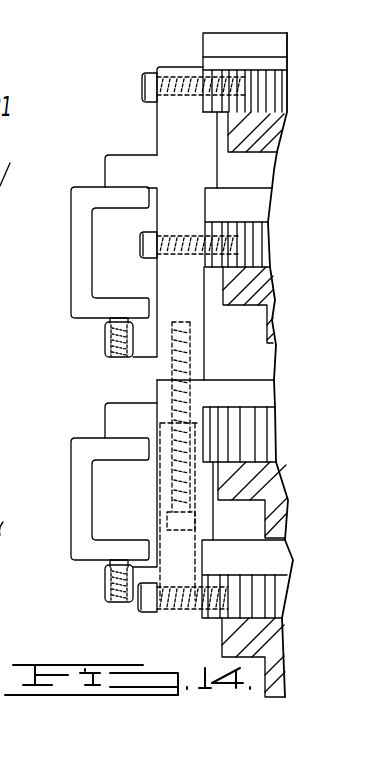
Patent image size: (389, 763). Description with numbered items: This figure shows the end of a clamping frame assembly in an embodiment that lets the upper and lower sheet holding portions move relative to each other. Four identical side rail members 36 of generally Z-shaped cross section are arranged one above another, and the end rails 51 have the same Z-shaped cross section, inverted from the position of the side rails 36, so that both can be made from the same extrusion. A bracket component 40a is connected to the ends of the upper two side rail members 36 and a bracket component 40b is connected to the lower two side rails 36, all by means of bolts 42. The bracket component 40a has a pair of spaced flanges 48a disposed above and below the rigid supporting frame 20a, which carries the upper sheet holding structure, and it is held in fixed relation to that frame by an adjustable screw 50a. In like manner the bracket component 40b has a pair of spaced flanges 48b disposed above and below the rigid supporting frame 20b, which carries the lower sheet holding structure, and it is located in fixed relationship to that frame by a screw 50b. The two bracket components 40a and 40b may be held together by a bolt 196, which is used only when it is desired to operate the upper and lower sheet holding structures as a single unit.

The side rail member 36 is at (268, 45).
The end rail 51 is at (270, 135).
The bolt 42 is at (147, 78).
The bracket component 40a is at (165, 128).
The bracket component 40b is at (157, 392).
The spaced flanges 48a is at (107, 163).
The spaced flanges 48b is at (107, 418).
The adjustable screw 50a is at (107, 348).
The screw 50b is at (103, 600).
The rigid supporting frame 20a is at (68, 252).
The rigid supporting frame 20b is at (68, 468).
The bolt 196 is at (177, 476).